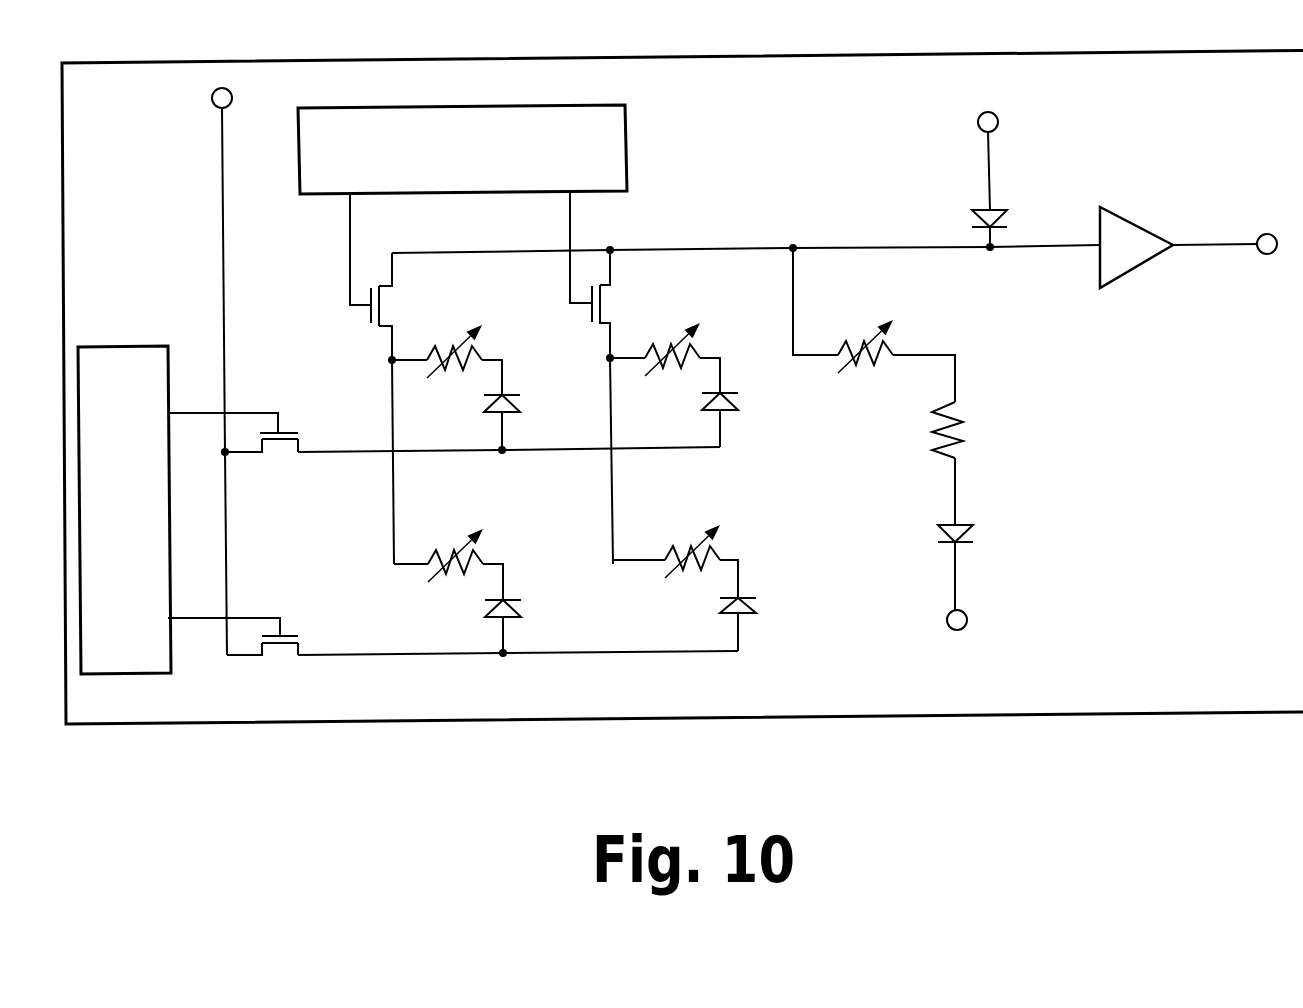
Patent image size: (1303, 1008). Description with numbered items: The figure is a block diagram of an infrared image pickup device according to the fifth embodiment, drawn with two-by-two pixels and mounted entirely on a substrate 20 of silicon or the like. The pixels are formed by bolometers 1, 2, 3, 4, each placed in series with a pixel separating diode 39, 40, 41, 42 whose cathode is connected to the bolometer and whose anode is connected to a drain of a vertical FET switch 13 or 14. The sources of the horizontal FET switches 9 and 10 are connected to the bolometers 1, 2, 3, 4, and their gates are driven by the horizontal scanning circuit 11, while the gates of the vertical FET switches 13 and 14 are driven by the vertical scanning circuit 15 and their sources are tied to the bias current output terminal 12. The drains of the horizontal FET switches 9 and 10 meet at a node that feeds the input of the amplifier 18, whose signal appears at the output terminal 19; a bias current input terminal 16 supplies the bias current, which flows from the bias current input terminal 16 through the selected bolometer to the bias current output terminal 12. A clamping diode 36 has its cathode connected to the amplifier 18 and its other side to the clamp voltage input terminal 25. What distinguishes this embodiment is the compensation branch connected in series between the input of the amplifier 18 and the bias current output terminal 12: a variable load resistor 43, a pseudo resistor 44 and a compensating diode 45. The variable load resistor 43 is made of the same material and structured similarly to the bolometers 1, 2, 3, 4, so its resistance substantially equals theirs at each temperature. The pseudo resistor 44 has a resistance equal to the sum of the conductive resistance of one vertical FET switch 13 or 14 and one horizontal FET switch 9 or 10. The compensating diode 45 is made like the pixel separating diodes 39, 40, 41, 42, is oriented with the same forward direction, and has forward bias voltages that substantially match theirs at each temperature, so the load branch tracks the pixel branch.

The bolometer 1 is at (448, 342).
The bolometer 2 is at (665, 340).
The bolometer 3 is at (448, 538).
The bolometer 4 is at (683, 537).
The horizontal FET switch 9 is at (338, 287).
The horizontal FET switch 10 is at (567, 287).
The horizontal scanning circuit 11 is at (627, 190).
The bias current output terminal 12 is at (968, 622).
The vertical FET switch 13 is at (265, 397).
The vertical FET switch 14 is at (267, 602).
The vertical scanning circuit 15 is at (170, 653).
The bias current input terminal 16 is at (212, 100).
The amplifier 18 is at (1135, 222).
The output terminal 19 is at (1266, 232).
The substrate 20 is at (1070, 713).
The clamp voltage input terminal 25 is at (1000, 118).
The clamping diode 36 is at (1010, 218).
The pixel separating diode 39 is at (520, 405).
The pixel separating diode 40 is at (740, 403).
The pixel separating diode 41 is at (522, 608).
The pixel separating diode 42 is at (760, 608).
The variable load resistor 43 is at (862, 322).
The pseudo resistor 44 is at (975, 428).
The compensating diode 45 is at (982, 535).